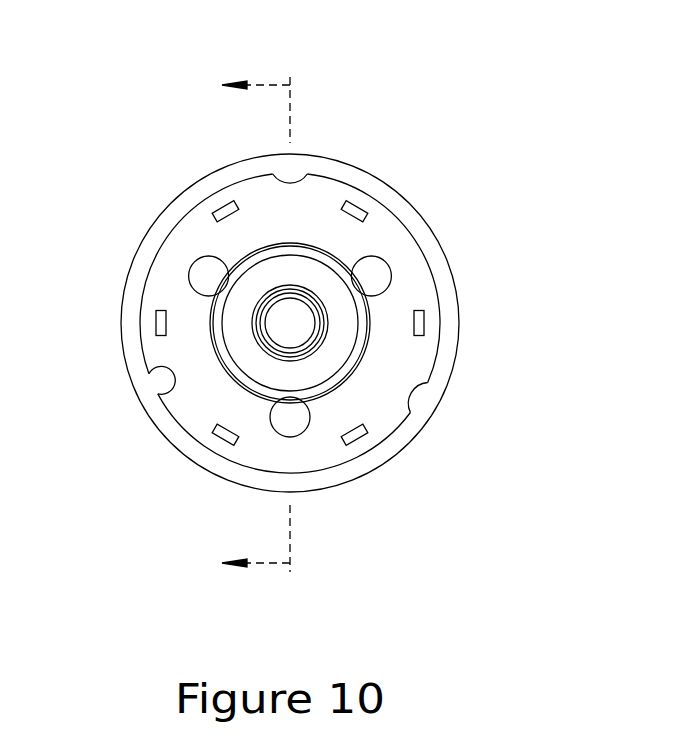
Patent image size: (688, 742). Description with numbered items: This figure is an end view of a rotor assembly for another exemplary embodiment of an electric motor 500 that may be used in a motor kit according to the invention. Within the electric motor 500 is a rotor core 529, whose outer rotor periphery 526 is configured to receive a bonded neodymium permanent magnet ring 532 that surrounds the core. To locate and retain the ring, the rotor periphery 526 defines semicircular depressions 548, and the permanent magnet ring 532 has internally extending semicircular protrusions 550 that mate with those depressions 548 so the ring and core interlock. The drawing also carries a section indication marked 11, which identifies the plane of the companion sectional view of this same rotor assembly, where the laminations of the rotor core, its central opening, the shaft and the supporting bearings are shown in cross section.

The electric motor 500 is at (300, 303).
The rotor core 529 is at (387, 169).
The rotor periphery 526 is at (415, 240).
The permanent magnet ring 532 is at (459, 300).
The semicircular depressions 548 is at (432, 414).
The semicircular protrusions 550 is at (160, 364).
The section line 11- 11 is at (276, 326).